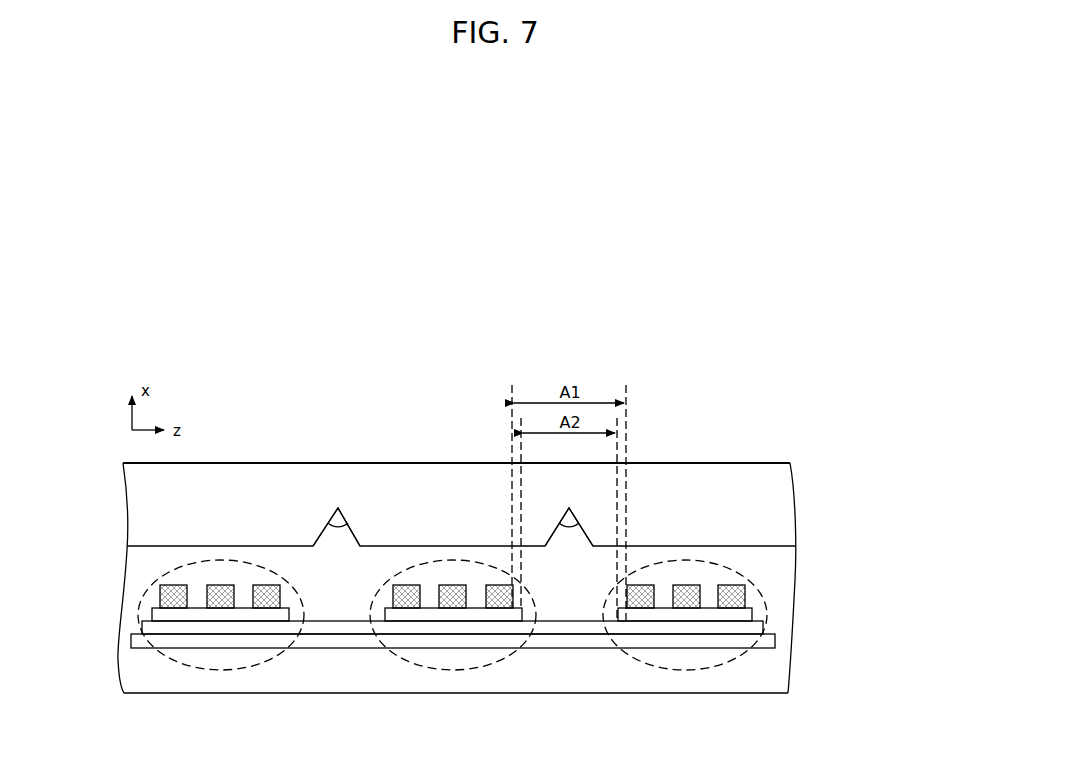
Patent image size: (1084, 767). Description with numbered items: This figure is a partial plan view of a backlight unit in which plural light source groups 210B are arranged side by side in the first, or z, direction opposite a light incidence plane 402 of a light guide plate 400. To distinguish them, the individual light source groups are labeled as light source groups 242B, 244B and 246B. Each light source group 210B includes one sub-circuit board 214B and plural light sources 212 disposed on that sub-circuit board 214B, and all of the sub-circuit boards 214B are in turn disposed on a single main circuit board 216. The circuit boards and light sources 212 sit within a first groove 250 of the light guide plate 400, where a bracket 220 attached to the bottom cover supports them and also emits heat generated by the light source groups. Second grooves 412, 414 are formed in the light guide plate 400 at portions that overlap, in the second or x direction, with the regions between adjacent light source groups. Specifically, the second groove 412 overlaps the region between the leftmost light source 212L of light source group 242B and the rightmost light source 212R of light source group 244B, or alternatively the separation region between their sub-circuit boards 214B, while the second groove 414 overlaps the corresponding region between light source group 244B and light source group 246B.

The light guide plate 400 is at (490, 487).
The light incidence plane 402 is at (780, 539).
The second groove 412 is at (585, 528).
The second groove 414 is at (350, 527).
The light source 212 is at (509, 664).
The rightmost light source 212R is at (498, 598).
The leftmost light source 212L is at (638, 602).
The sub-circuit board 214B is at (753, 613).
The light source group 210B is at (539, 664).
The main circuit board 216 is at (763, 630).
The bracket 220 is at (772, 643).
The first groove 250 is at (782, 683).
The light source group 242B is at (705, 672).
The light source group 244B is at (472, 672).
The light source group 246B is at (238, 672).